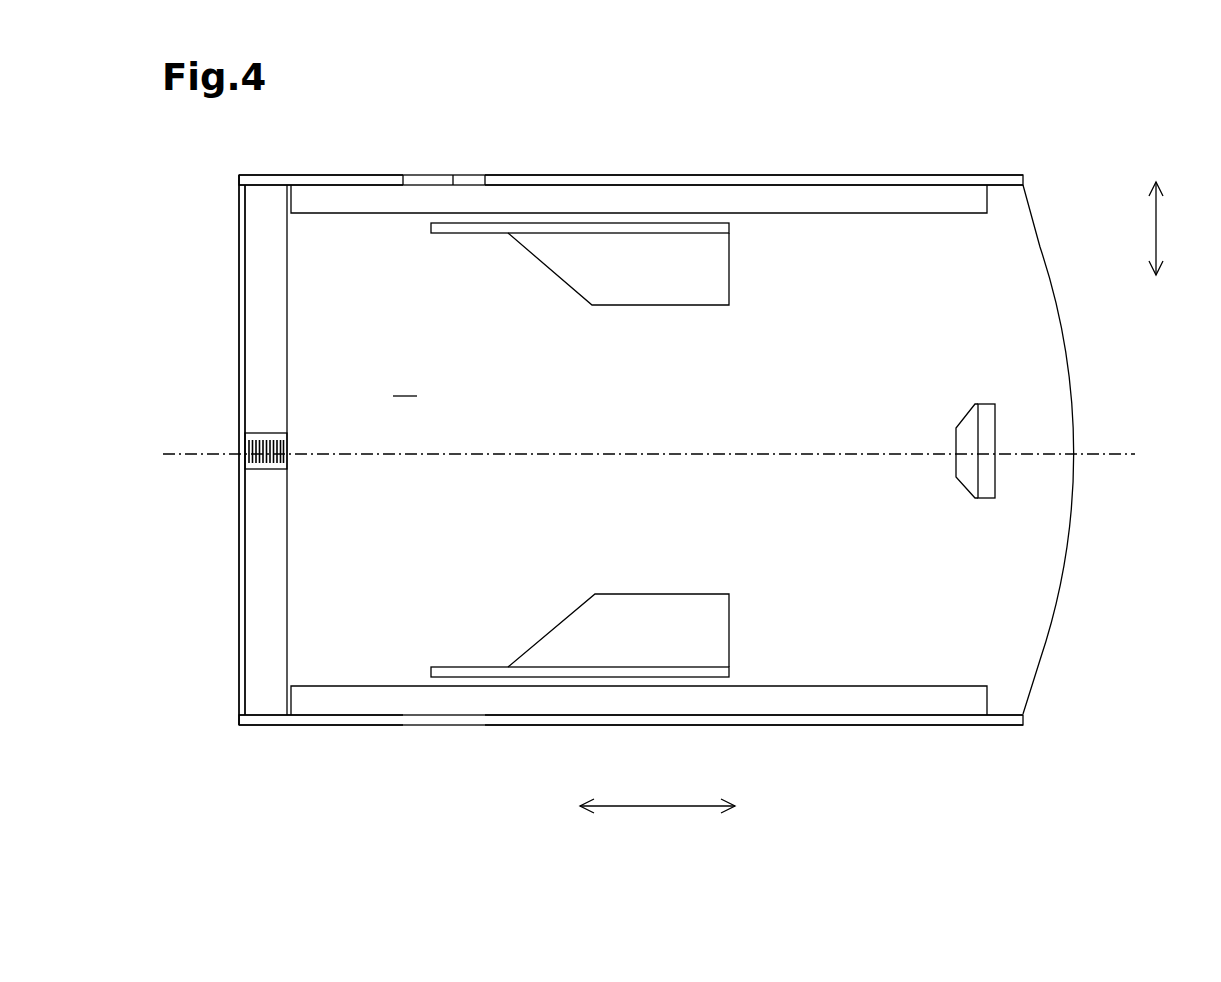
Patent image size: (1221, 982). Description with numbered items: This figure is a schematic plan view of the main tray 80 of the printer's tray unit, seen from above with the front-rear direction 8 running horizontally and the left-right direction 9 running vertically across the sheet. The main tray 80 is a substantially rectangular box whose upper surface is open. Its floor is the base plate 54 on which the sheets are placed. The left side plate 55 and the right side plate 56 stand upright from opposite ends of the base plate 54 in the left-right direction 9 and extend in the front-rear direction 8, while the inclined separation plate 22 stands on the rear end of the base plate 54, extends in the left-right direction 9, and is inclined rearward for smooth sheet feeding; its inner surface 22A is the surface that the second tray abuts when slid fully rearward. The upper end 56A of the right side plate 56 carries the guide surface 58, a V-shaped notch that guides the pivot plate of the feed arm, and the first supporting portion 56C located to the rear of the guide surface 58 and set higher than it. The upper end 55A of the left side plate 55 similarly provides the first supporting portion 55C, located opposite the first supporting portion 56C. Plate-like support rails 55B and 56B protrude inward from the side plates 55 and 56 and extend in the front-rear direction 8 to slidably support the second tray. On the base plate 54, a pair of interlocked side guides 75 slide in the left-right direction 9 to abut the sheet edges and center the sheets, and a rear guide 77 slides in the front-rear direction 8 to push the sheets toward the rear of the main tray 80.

The main tray 80 is at (248, 758).
The inclined separation plate 22 is at (240, 302).
The inner surface of the inclined separation plate 22A is at (260, 355).
The right side plate 56 is at (925, 175).
The upper end of the right side plate 56A is at (845, 178).
The support rail 56B is at (827, 210).
The first supporting portion 56C is at (310, 176).
The guide surface 58 is at (433, 171).
The side guides 75 is at (492, 234).
The base plate 54 is at (405, 386).
The rear guide 77 is at (997, 435).
The left side plate 55 is at (925, 726).
The upper end of the left side plate 55A is at (870, 724).
The support rail 55B is at (828, 688).
The first supporting portion 55C is at (315, 726).
The left-right direction 9 is at (1152, 212).
The front-rear direction 8 is at (652, 808).